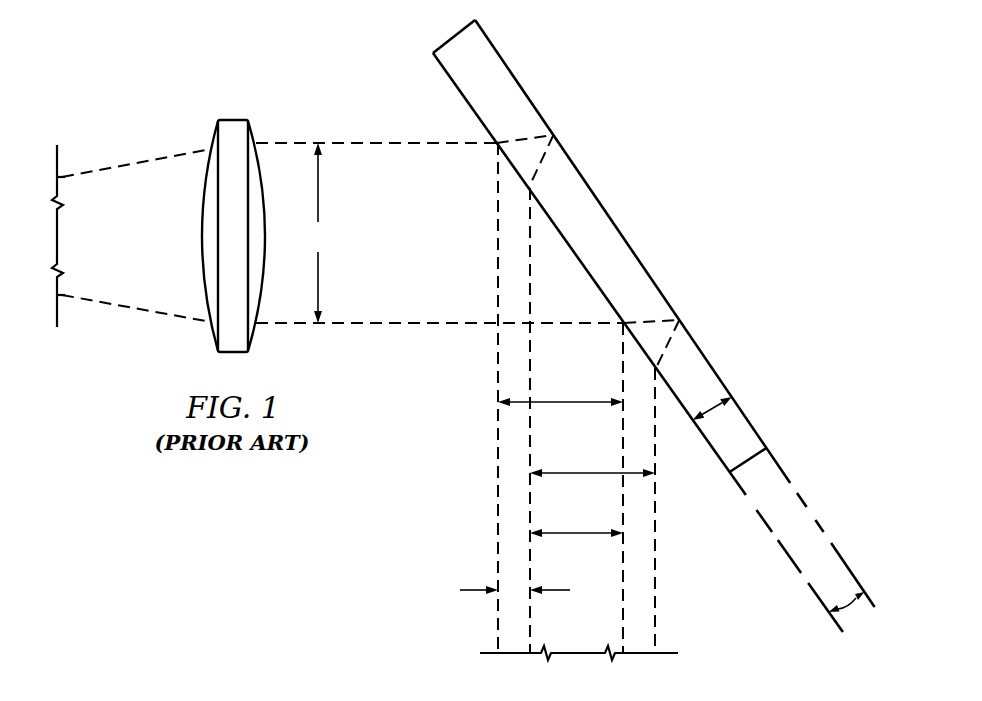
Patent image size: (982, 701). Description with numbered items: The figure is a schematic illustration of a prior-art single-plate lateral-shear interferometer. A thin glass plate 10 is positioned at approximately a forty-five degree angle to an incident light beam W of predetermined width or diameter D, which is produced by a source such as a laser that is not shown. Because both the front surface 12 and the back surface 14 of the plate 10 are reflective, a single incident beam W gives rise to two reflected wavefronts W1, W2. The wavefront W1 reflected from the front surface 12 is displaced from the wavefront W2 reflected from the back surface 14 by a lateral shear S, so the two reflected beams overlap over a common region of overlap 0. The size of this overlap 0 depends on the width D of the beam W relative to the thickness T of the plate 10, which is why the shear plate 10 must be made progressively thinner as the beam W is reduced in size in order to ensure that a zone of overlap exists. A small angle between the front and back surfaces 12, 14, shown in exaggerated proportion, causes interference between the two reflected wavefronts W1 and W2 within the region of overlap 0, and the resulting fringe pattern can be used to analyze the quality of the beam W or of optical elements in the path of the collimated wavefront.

The thin glass plate 10 is at (641, 326).
The front surface 12 is at (459, 92).
The back surface 14 is at (573, 163).
The width or diameter of incident beam D is at (318, 233).
The incident light beam W is at (383, 312).
The wavefront reflected from front surface W1 is at (560, 402).
The wavefront reflected from back surface W2 is at (577, 472).
The region of overlap 0 is at (578, 533).
The lateral shear S is at (473, 590).
The thickness of plate T is at (712, 408).